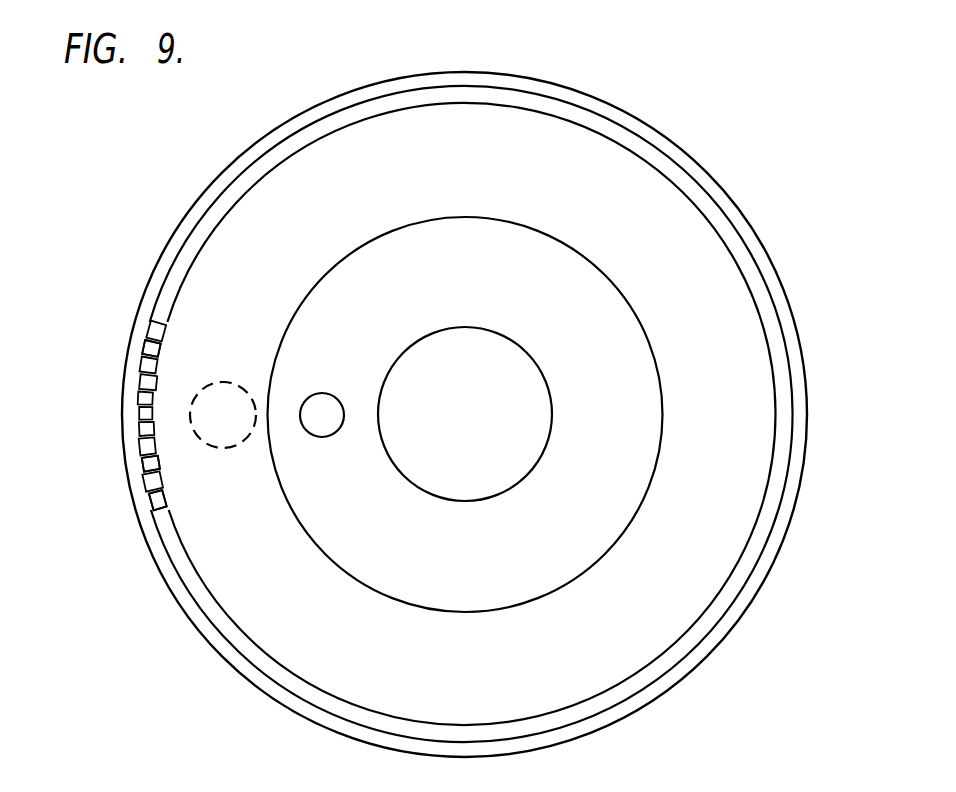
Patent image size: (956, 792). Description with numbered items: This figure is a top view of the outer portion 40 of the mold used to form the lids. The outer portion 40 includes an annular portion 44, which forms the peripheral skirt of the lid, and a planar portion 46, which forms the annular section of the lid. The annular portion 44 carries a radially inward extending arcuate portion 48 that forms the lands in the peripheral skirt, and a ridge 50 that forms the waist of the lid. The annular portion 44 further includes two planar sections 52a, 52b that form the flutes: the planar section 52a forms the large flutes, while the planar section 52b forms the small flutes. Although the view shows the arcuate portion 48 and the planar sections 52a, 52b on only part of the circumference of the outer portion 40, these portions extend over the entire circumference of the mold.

The outer portion 40 is at (238, 154).
The annular portion 44 is at (184, 217).
The planar portion 46 is at (560, 133).
The radially inward extending arcuate portion 48 is at (146, 369).
The ridge 50 is at (151, 349).
The planar section 52a is at (156, 496).
The planar section 52b is at (149, 469).